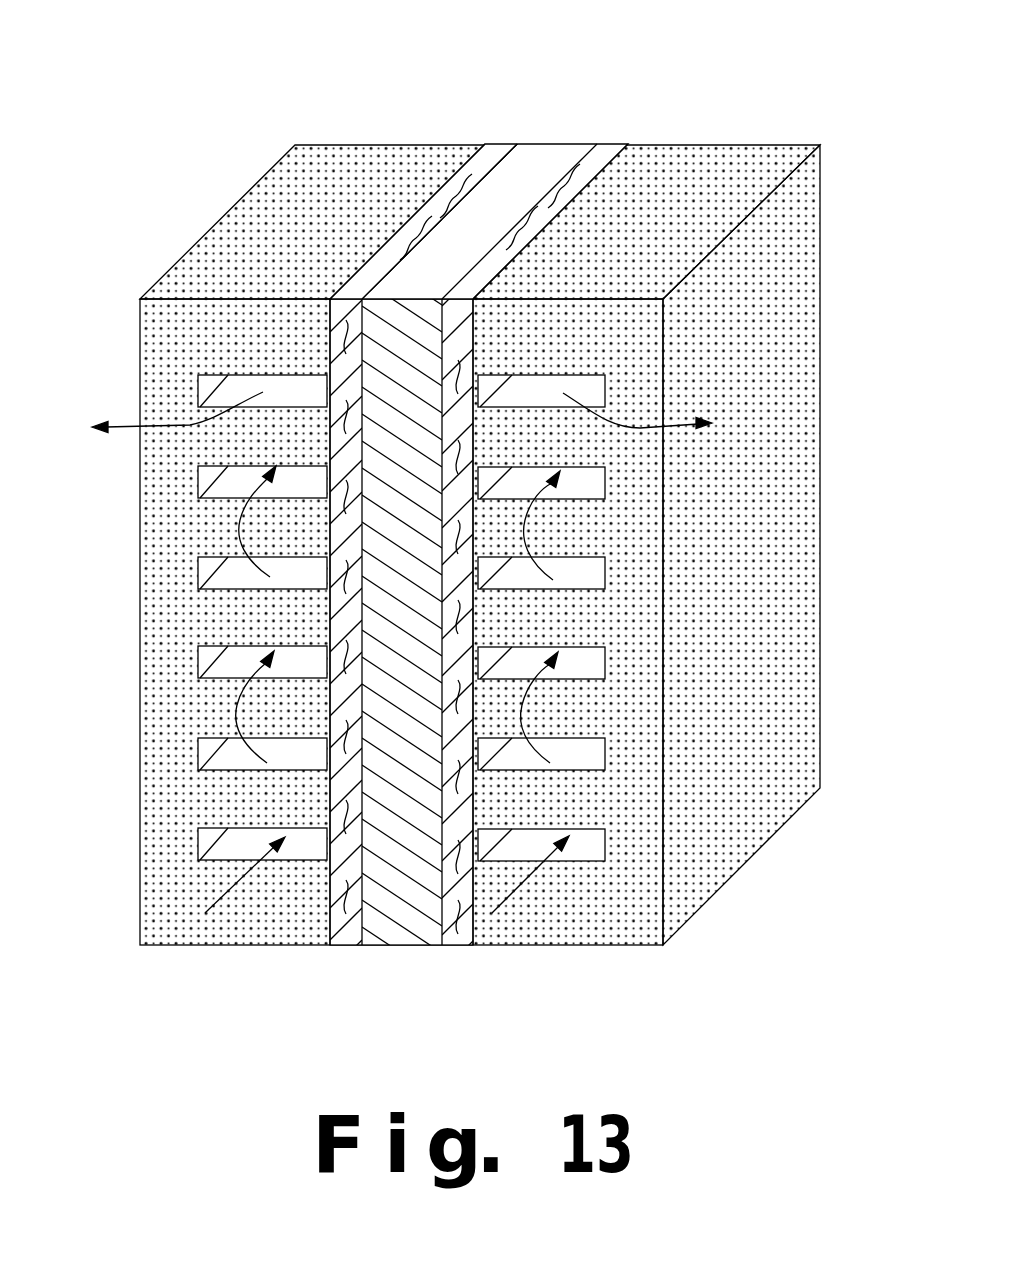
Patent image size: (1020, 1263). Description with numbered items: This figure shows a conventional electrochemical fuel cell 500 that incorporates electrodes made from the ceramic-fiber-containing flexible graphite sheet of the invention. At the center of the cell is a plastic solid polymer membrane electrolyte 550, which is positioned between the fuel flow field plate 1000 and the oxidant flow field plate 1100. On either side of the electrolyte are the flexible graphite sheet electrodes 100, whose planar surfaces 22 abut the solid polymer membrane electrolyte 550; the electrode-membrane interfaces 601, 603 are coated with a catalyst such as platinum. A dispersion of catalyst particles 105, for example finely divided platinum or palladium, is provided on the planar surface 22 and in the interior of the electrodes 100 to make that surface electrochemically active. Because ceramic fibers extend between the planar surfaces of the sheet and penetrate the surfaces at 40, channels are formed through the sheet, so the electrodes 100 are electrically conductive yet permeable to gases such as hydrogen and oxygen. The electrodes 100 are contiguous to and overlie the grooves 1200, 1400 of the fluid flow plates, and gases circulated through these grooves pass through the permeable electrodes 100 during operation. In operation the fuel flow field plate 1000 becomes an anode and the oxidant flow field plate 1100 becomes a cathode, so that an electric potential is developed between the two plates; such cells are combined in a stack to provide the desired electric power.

The planar surface 22 is at (440, 205).
The surface penetration points 40 is at (490, 386).
The flexible graphite sheet electrode 100 is at (507, 143).
The catalyst particles 105 is at (520, 150).
The fuel cell 500 is at (577, 526).
The solid polymer membrane electrolyte 550 is at (578, 155).
The electrode-membrane interface 601 is at (330, 945).
The electrode-membrane interface 603 is at (447, 933).
The fuel flow field plate 1000 is at (516, 545).
The oxidant flow field plate 1100 is at (237, 203).
The grooves 1200 is at (583, 710).
The grooves 1400 is at (233, 852).